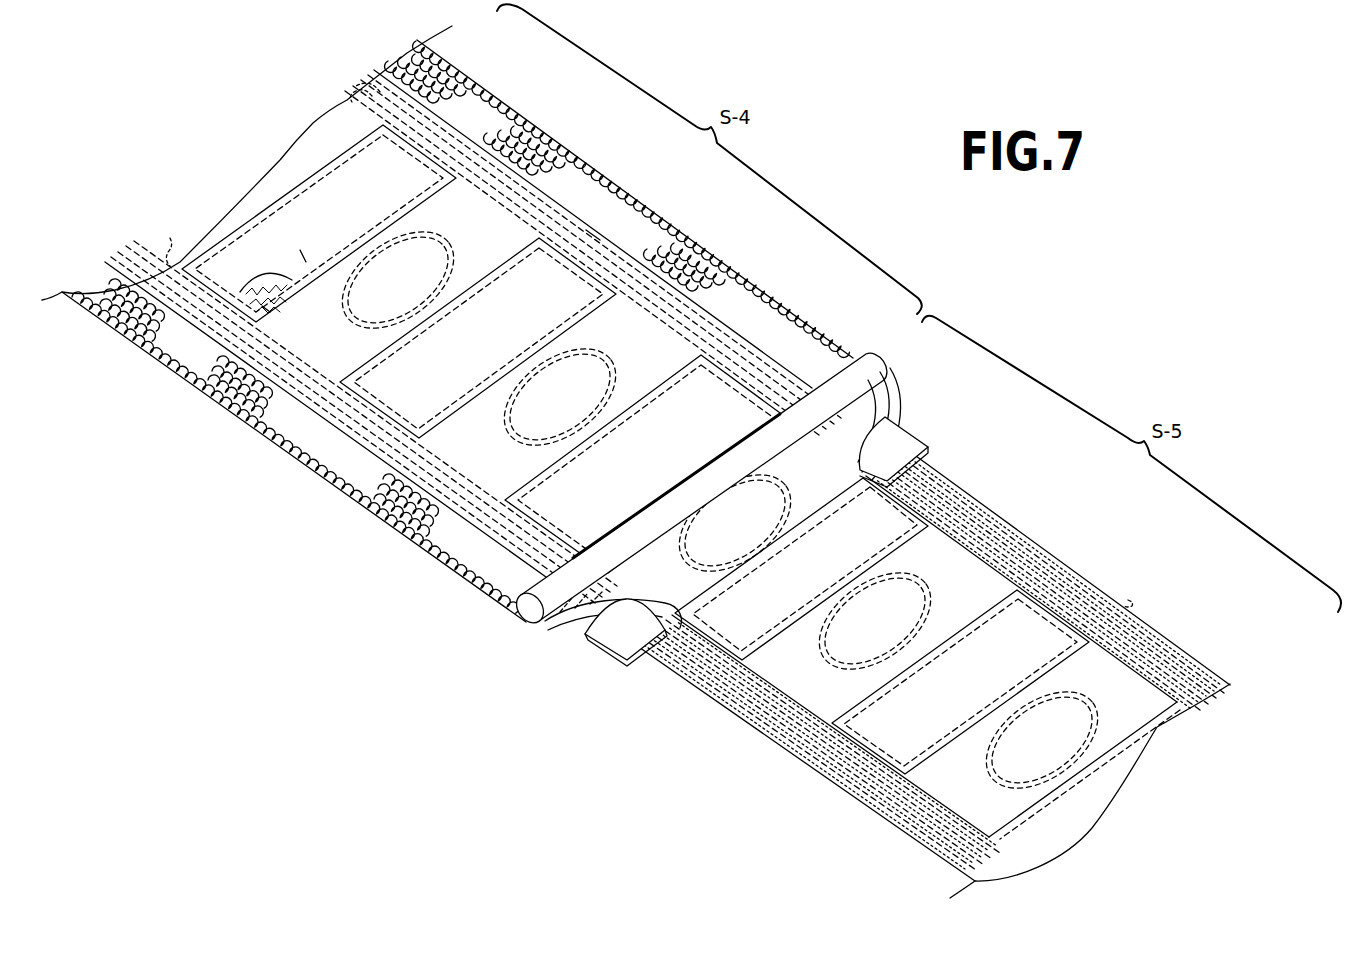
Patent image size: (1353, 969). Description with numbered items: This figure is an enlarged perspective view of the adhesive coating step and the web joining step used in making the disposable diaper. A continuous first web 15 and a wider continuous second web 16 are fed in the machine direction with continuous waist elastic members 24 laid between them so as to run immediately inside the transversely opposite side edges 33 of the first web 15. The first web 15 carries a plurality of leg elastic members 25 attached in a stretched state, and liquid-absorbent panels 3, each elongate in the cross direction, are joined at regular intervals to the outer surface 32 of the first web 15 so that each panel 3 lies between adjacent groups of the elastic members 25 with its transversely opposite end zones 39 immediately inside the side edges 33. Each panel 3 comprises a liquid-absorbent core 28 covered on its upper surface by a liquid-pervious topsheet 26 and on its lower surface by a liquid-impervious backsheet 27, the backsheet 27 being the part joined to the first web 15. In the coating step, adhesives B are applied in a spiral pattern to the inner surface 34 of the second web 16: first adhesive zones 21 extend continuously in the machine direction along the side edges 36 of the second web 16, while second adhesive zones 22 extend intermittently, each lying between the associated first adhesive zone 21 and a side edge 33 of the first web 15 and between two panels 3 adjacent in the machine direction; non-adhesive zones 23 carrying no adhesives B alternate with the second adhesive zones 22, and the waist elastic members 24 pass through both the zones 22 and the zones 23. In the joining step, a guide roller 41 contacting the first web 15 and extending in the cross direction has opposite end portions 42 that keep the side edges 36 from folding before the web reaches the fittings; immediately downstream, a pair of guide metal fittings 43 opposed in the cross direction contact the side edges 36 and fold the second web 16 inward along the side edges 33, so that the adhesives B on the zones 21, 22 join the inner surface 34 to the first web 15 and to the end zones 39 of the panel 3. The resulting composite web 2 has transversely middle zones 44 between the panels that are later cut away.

The composite web 2 is at (586, 230).
The liquid-absorbent panel 3 is at (378, 124).
The first web 15 is at (318, 148).
The second web 16 is at (500, 130).
The first adhesive zones 21 is at (490, 102).
The second adhesive zones 22 is at (578, 165).
The non-adhesive zones 23 is at (452, 96).
The waist elastic members 24 is at (352, 93).
The leg elastic members 25 is at (400, 240).
The liquid-pervious topsheet 26 is at (303, 250).
The liquid-impervious backsheet 27 is at (278, 268).
The liquid-absorbent core 28 is at (267, 307).
The outer surface 32 is at (287, 445).
The side edges 33 is at (758, 345).
The inner surface 34 is at (187, 370).
The side edges 36 is at (670, 230).
The end zones 39 is at (437, 160).
The guide roller 41 is at (836, 380).
The end portions 42 is at (876, 372).
The guide metal fittings 43 is at (612, 637).
The middle zones 44 is at (1095, 778).
The adhesives B is at (437, 62).